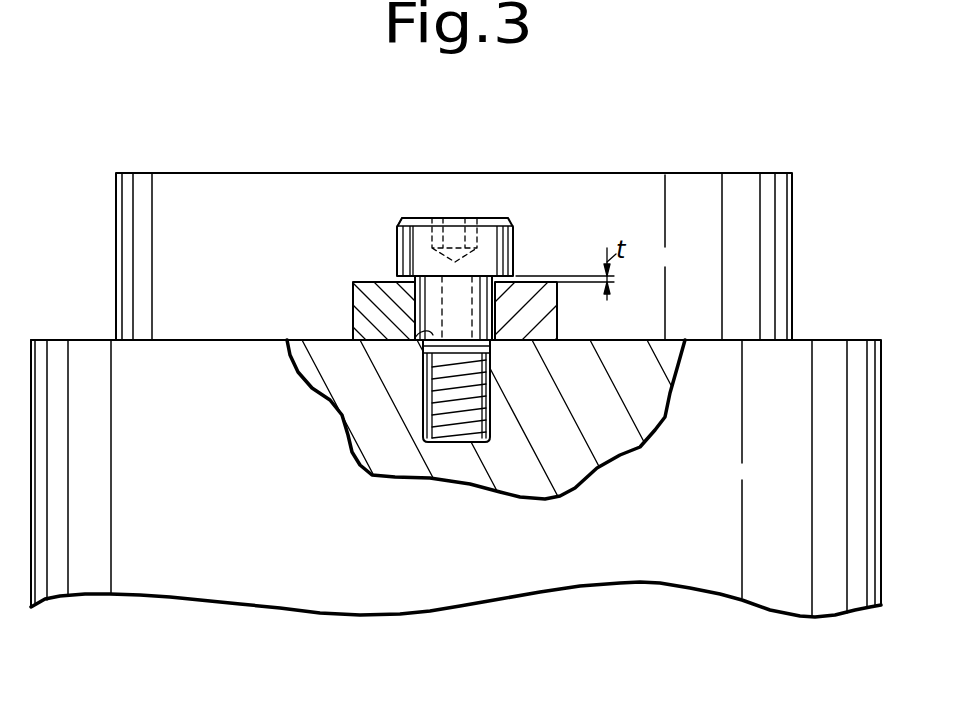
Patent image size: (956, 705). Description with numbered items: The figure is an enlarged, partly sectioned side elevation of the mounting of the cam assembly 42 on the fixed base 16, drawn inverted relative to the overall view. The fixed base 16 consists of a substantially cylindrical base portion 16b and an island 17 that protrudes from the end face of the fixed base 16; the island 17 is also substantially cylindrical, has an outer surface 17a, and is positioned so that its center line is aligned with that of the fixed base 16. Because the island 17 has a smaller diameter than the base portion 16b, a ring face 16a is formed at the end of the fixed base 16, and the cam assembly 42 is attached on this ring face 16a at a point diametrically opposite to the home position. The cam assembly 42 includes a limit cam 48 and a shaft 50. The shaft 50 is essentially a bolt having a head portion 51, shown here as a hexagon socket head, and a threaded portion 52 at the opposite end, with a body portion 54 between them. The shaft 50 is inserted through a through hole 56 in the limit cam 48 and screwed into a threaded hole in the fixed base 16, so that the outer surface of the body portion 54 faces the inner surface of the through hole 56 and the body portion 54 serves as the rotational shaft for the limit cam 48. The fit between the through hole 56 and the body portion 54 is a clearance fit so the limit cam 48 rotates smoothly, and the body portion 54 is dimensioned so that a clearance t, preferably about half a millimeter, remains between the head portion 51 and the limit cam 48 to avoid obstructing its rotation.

The fixed base 16 is at (96, 141).
The ring face 16a is at (62, 340).
The base portion 16b is at (288, 511).
The island 17 is at (236, 173).
The outer surface 17a is at (792, 217).
The cam assembly 42 is at (532, 208).
The limit cam 48 is at (353, 282).
The shaft 50 is at (488, 218).
The head portion 51 is at (426, 218).
The threaded portion 52 is at (511, 441).
The body portion 54 is at (609, 356).
The through hole 56 is at (416, 338).